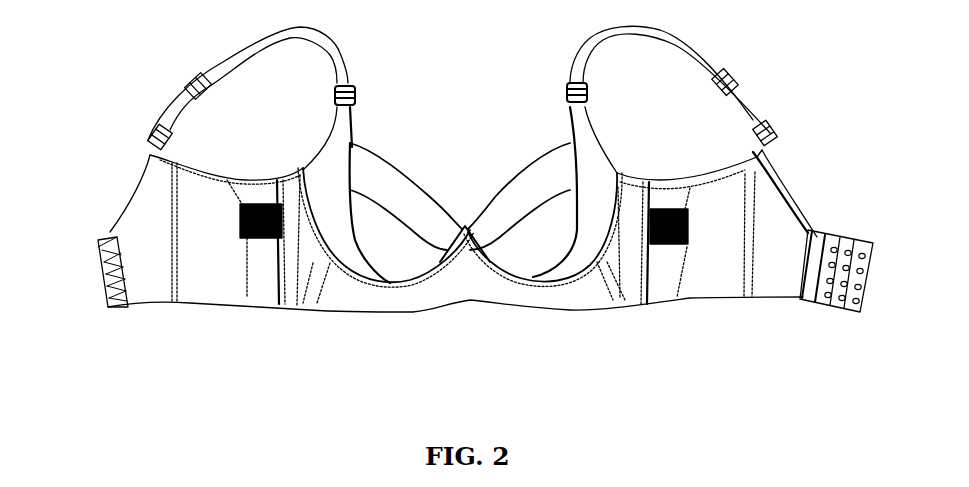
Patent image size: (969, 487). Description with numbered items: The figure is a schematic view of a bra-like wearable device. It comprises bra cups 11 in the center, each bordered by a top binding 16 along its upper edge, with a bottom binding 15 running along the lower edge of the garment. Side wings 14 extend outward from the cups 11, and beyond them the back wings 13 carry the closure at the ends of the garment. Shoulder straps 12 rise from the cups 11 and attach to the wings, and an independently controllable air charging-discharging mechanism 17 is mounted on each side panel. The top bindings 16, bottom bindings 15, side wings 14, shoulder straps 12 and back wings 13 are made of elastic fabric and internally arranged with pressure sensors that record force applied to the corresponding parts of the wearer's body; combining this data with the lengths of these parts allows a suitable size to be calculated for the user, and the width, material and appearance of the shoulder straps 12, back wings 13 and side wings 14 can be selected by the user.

The bra cup 11 is at (392, 247).
The shoulder strap 12 is at (223, 63).
The back wing 13 is at (130, 232).
The side wing 14 is at (295, 256).
The bottom binding 15 is at (362, 307).
The top binding 16 is at (380, 177).
The independently controllable air charging-discharging mechanism 17 is at (250, 240).